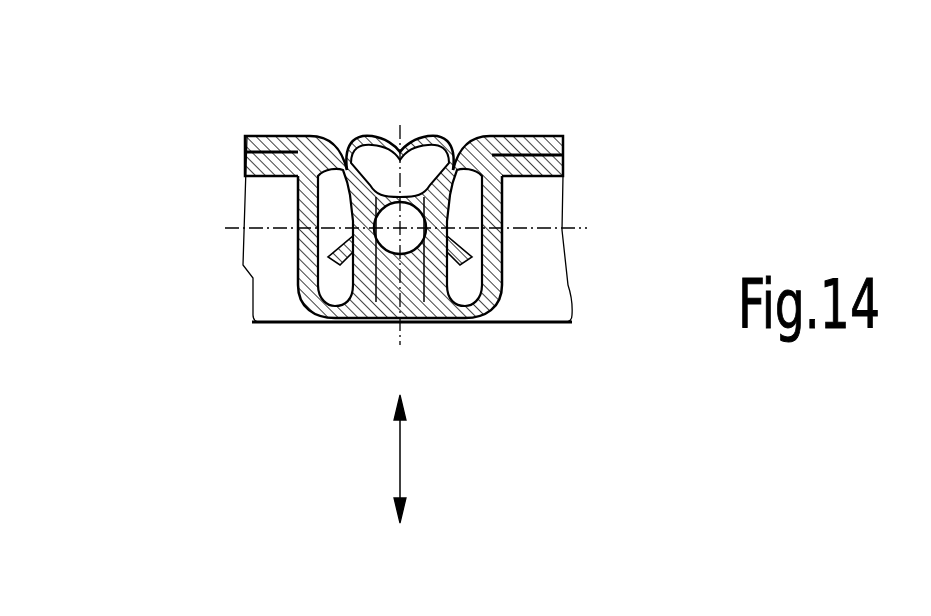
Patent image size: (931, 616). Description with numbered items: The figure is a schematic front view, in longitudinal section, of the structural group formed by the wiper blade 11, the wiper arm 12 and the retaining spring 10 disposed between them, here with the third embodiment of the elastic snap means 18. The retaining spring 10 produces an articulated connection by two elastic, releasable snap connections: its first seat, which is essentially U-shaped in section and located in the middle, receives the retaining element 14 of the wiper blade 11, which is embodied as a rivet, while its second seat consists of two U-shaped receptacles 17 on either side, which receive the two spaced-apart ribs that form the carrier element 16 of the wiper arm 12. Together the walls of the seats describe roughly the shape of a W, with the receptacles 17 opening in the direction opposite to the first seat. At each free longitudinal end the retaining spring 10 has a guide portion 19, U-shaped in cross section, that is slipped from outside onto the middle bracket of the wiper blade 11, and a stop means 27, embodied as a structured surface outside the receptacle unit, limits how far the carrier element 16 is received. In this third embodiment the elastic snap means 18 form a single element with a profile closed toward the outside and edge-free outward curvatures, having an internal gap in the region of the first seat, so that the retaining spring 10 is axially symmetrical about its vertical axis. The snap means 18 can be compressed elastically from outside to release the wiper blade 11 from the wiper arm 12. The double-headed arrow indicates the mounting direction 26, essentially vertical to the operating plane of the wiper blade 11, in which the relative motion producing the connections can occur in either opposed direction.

The retaining spring 10 is at (445, 127).
The wiper blade 11 is at (416, 300).
The wiper arm 12 is at (288, 128).
The retaining element 14 is at (387, 297).
The carrier element 16 is at (340, 213).
The receptacles 17 is at (223, 452).
The elastic snap means 18 is at (383, 132).
The guide portion 19 is at (247, 151).
The mounting direction 26 is at (400, 472).
The stop means 27 is at (297, 175).